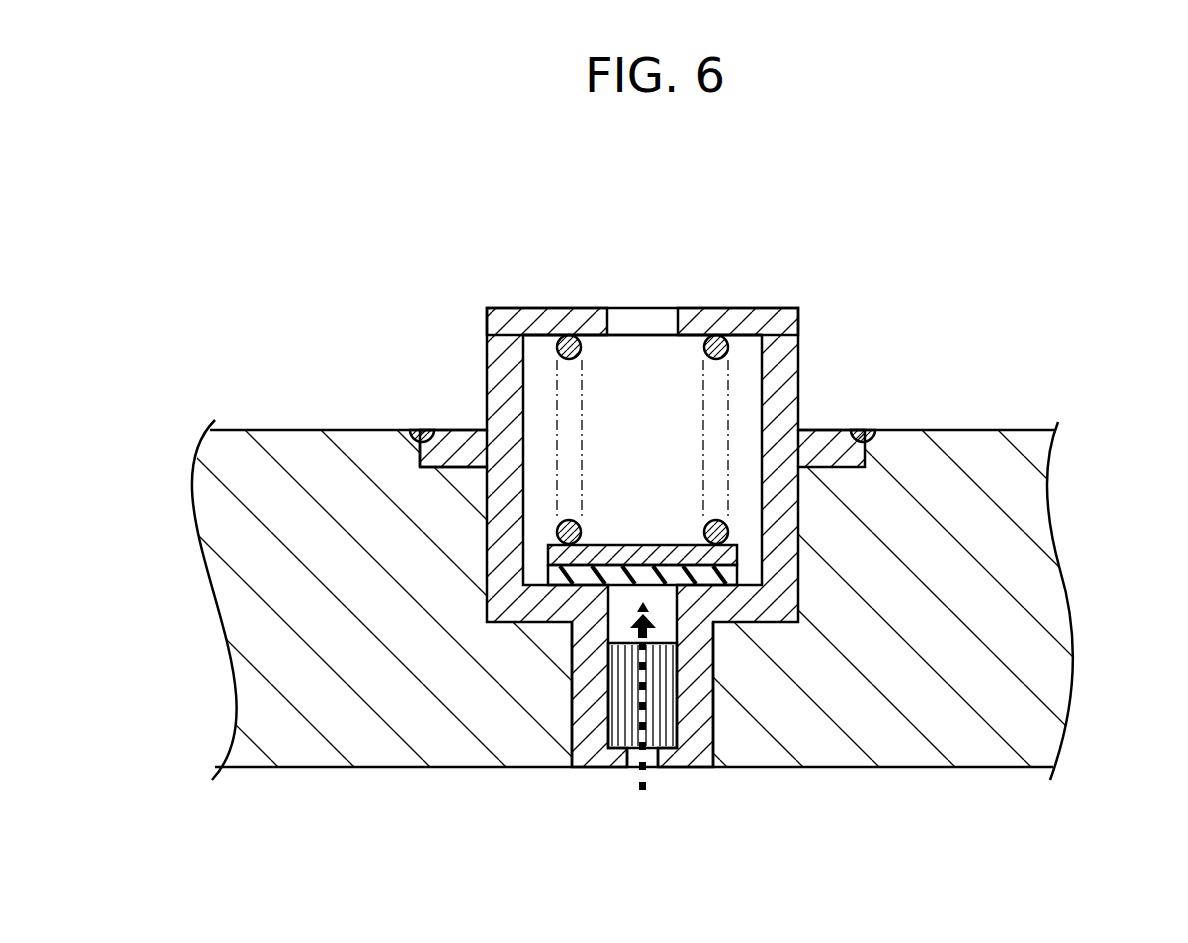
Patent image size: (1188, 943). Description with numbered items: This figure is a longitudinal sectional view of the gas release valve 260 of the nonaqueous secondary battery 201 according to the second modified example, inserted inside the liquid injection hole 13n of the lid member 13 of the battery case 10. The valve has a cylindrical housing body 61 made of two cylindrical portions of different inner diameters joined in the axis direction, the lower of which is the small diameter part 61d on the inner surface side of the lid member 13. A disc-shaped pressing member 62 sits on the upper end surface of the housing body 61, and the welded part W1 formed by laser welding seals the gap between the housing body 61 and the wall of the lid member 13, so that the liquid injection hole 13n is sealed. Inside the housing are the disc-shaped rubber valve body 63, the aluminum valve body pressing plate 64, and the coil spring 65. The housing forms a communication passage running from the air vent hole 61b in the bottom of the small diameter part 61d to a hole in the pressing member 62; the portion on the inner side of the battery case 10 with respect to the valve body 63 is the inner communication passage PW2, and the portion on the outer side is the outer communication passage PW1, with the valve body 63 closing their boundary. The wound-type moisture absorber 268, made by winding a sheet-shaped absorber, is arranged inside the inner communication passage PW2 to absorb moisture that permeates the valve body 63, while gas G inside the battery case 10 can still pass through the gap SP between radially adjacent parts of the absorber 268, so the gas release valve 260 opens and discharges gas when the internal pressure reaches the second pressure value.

The battery case 10 is at (338, 417).
The lid member 13 is at (237, 467).
The liquid injection hole 13n is at (483, 428).
The nonaqueous secondary battery 201 is at (965, 335).
The housing body 61 is at (792, 380).
The air vent hole 61b is at (650, 765).
The small diameter part 61d is at (580, 718).
The pressing member 62 is at (585, 316).
The gas release valve 260 is at (714, 318).
The coil spring 65 is at (572, 338).
The valve body pressing plate 64 is at (560, 555).
The valve body 63 is at (563, 580).
The wound-type moisture absorber 268 is at (665, 698).
The gap SP is at (613, 628).
The outer communication passage PW1 is at (762, 359).
The inner communication passage PW2 is at (677, 597).
The welded part W1 is at (862, 431).
The gas G is at (640, 793).